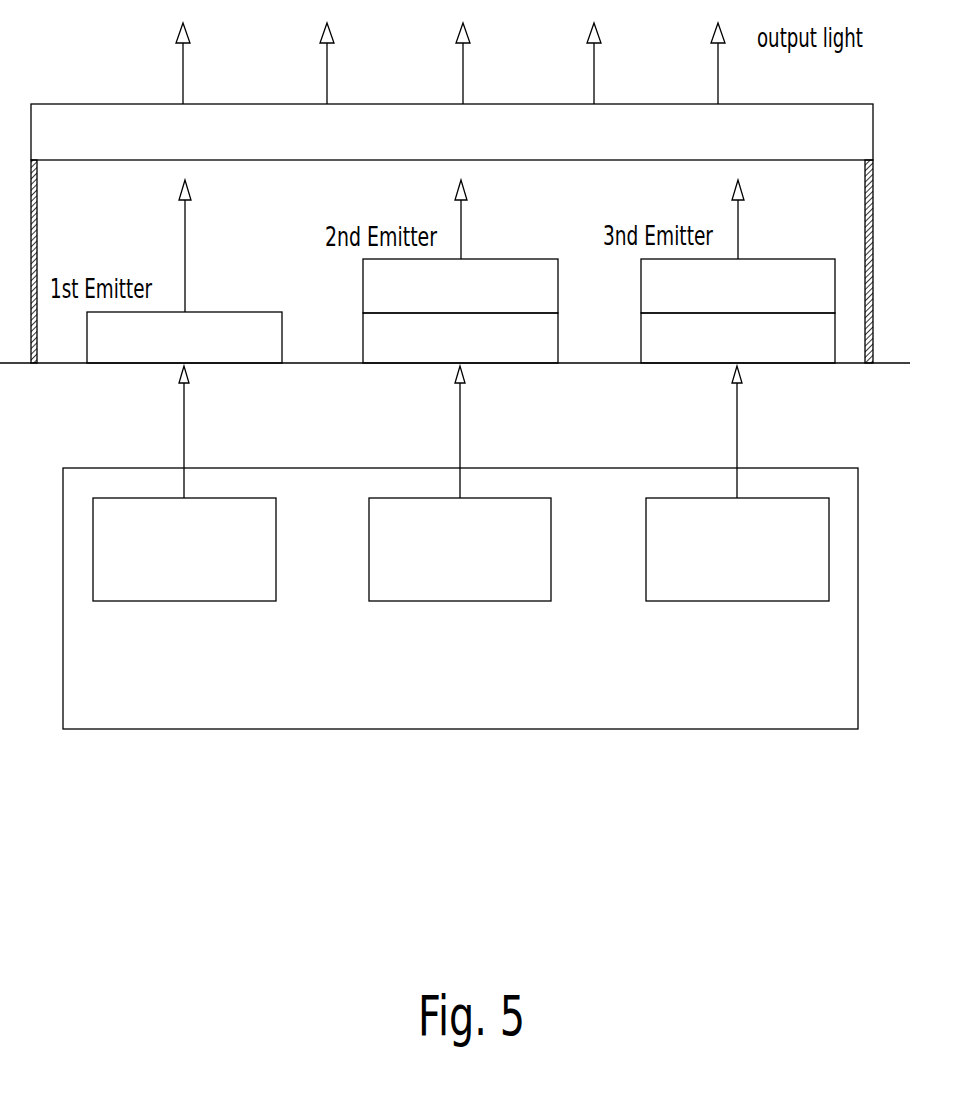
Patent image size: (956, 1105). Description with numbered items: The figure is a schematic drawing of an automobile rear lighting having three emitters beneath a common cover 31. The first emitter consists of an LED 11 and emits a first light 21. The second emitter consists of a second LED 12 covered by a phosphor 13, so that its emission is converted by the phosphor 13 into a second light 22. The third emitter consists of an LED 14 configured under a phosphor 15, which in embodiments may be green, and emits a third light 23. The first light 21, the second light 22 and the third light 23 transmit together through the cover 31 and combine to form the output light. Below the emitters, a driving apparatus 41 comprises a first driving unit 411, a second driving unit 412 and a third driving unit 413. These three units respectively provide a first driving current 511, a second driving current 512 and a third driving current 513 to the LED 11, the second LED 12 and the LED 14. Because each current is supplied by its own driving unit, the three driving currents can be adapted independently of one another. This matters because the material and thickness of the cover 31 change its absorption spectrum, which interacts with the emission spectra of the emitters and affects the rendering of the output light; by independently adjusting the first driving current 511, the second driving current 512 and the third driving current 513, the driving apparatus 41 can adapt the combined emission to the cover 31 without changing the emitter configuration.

The cover 31 is at (452, 132).
The first light 21 is at (207, 238).
The second light 22 is at (484, 212).
The third light 23 is at (761, 212).
The LED 11 is at (184, 337).
The second LED 12 is at (460, 338).
The phosphor 13 is at (460, 286).
The LED 14 is at (738, 338).
The phosphor 15 is at (738, 286).
The first driving current 511 is at (213, 432).
The second driving current 512 is at (490, 432).
The third driving current 513 is at (767, 432).
The first driving unit 411 is at (184, 549).
The second driving unit 412 is at (460, 549).
The third driving unit 413 is at (737, 549).
The driving apparatus 41 is at (460, 598).